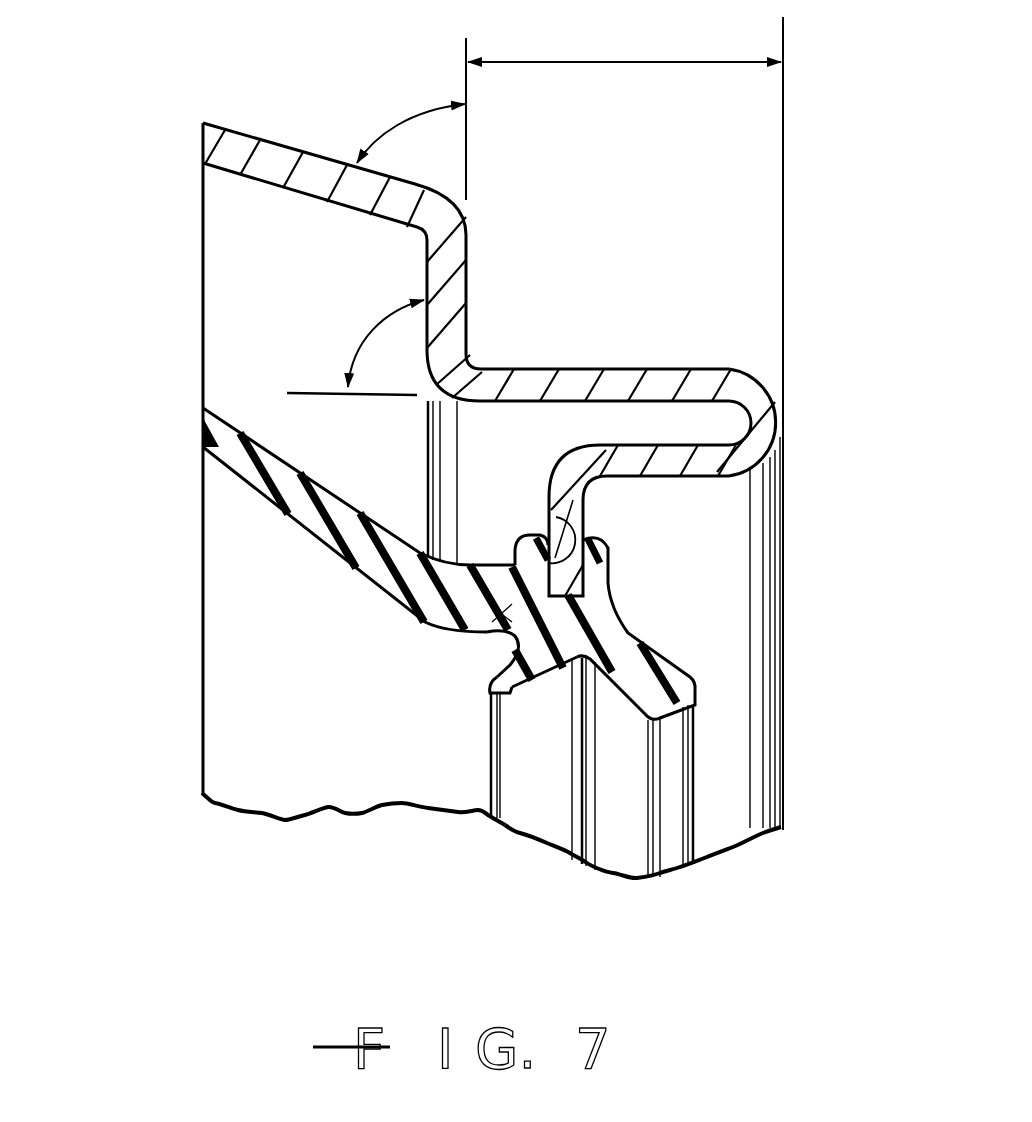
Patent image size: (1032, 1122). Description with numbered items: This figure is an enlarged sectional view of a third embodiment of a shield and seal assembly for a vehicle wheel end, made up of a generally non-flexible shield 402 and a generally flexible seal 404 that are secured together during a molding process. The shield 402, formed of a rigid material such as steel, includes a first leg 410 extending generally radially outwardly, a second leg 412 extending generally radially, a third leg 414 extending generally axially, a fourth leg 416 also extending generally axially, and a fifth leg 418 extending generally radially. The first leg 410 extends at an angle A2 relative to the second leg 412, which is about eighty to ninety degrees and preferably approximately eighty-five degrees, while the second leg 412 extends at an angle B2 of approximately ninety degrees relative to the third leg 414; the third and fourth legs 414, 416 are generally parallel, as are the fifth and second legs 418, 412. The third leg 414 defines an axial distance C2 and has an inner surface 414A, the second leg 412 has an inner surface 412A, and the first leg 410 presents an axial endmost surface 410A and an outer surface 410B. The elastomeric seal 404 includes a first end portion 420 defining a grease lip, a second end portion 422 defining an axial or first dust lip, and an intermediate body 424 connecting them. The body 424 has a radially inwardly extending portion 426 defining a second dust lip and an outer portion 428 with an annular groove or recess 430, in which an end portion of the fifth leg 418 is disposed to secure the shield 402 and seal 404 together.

The shield 402 is at (787, 412).
The seal 404 is at (692, 661).
The first leg 410 is at (262, 142).
The axial endmost surface 410A is at (200, 138).
The outer surface 410B is at (297, 190).
The second leg 412 is at (458, 308).
The inner surface 412A is at (470, 267).
The third leg 414 is at (655, 385).
The inner surface 414A is at (558, 368).
The fourth leg 416 is at (730, 470).
The fifth leg 418 is at (570, 475).
The first end portion 420 is at (694, 710).
The second end portion 422 is at (200, 427).
The intermediate body 424 is at (505, 634).
The radially inwardly extending portion 426 is at (508, 695).
The outer portion 428 is at (606, 567).
The annular groove or recess 430 is at (558, 528).
The angle A2 is at (414, 112).
The angle B2 is at (368, 345).
The axial distance C2 is at (624, 423).